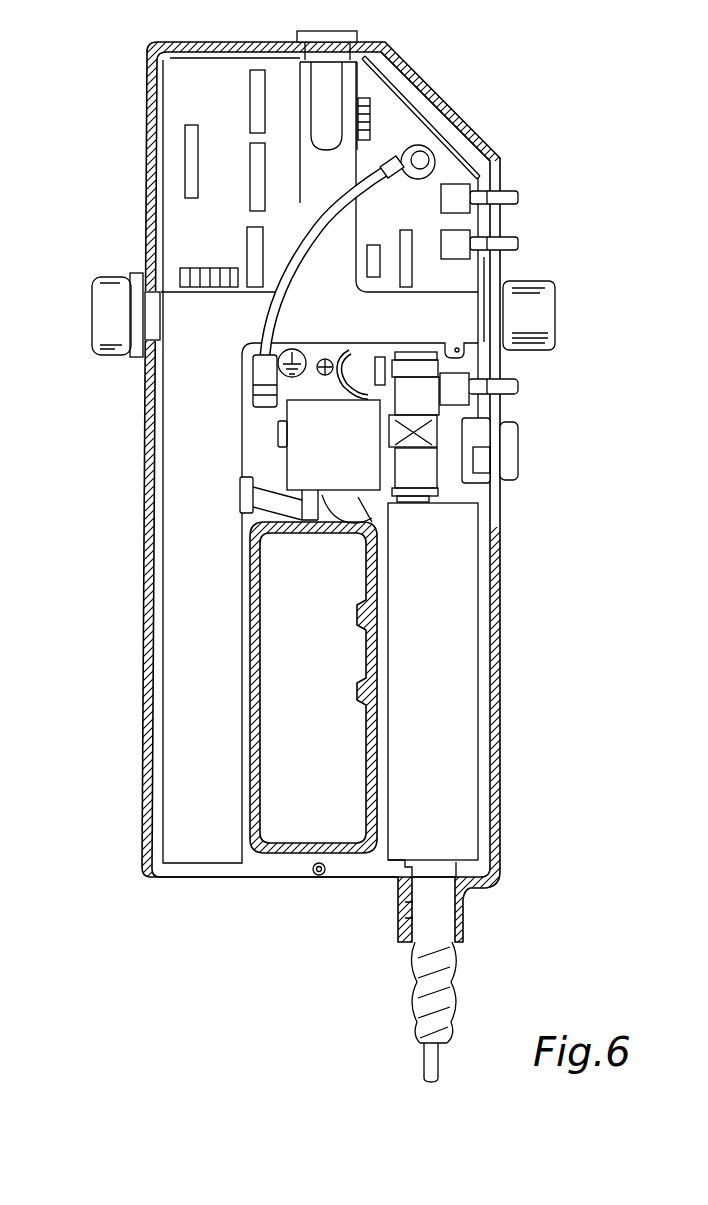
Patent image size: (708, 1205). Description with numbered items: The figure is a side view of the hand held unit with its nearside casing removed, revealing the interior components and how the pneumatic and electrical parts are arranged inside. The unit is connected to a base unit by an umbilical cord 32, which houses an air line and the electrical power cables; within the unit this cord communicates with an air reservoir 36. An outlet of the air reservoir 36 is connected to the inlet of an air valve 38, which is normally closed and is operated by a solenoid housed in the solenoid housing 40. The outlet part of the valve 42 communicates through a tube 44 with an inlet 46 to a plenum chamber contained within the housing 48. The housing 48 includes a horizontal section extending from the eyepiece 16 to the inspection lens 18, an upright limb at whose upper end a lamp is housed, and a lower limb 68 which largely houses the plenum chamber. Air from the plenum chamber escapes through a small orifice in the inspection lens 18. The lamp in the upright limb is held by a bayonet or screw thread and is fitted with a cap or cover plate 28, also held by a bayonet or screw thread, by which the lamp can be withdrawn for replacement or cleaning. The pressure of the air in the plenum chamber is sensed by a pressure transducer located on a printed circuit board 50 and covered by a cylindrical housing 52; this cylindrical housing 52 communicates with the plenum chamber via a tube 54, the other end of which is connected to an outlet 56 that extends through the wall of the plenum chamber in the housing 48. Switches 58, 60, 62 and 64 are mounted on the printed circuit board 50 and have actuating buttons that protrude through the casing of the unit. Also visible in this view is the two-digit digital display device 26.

The eyepiece 16 is at (542, 307).
The inspection lens 18 is at (100, 348).
The two-digit digital display device 26 is at (417, 110).
The cap or cover plate 28 is at (332, 38).
The umbilical cord 32 is at (452, 992).
The air reservoir 36 is at (463, 752).
The air valve 38 is at (435, 472).
The solenoid housing 40 is at (398, 430).
The outlet part of the valve 42 is at (430, 371).
The tube 44 is at (245, 510).
The inlet 46 is at (245, 476).
The housing 48 is at (157, 420).
The printed circuit board 50 is at (478, 155).
The cylindrical housing 52 is at (447, 177).
The tube 54 is at (325, 222).
The outlet 56 is at (245, 392).
The switch 58 is at (465, 197).
The switch 60 is at (462, 244).
The switch 62 is at (457, 390).
The switch 64 is at (487, 462).
The lower limb 68 is at (172, 716).